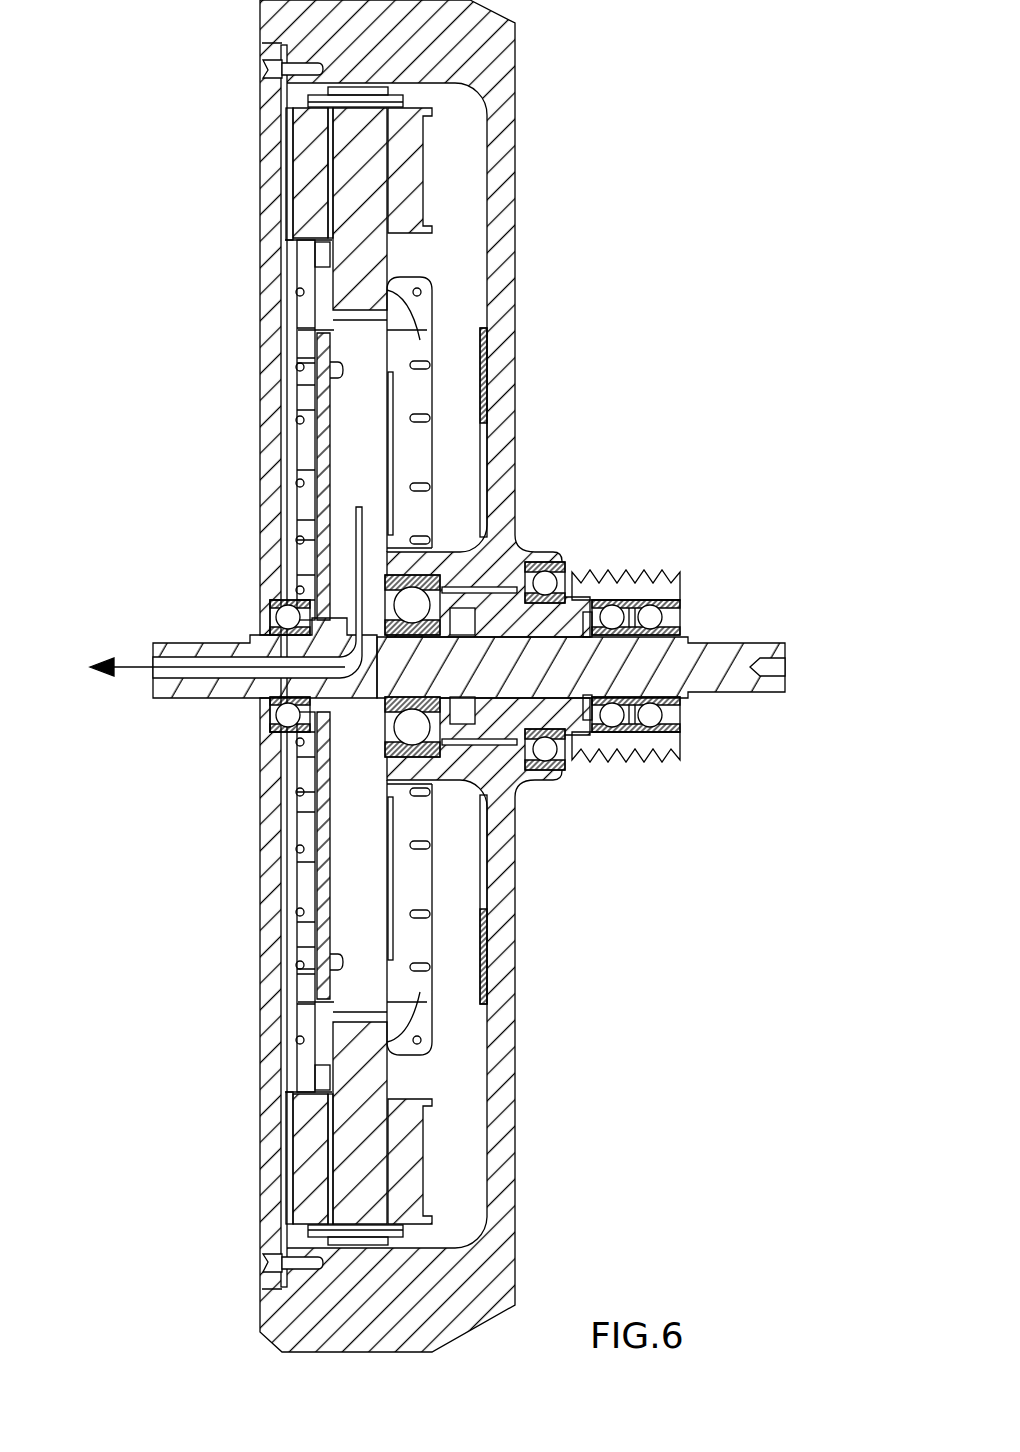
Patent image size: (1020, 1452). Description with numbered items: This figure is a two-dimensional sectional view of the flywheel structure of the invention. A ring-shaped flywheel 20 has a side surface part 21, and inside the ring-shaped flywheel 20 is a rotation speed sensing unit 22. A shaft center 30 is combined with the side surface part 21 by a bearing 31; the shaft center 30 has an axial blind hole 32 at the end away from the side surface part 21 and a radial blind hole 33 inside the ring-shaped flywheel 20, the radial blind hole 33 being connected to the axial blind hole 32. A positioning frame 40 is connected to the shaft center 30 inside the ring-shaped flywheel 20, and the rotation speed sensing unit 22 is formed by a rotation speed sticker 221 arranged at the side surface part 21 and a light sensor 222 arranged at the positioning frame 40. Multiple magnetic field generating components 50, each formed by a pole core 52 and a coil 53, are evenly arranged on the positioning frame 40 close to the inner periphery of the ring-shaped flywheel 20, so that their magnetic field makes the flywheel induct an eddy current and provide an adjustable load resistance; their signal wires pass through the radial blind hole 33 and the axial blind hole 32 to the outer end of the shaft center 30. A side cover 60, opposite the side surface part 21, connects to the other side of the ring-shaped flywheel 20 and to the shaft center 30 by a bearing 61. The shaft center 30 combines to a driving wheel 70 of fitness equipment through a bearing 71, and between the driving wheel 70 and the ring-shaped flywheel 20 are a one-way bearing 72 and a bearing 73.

The ring-shaped flywheel 20 is at (293, 1325).
The side surface part 21 is at (500, 1120).
The rotation speed sensing unit 22 is at (606, 340).
The rotation speed sticker 221 is at (487, 355).
The light sensor 222 is at (342, 370).
The shaft center 30 is at (712, 667).
The bearing 31 is at (410, 737).
The axial blind hole 32 is at (180, 688).
The radial blind hole 33 is at (350, 627).
The positioning frame 40 is at (297, 445).
The magnetic field generating components 50 is at (600, 135).
The pole core 52 is at (360, 212).
The coil 53 is at (402, 142).
The side cover 60 is at (272, 1110).
The bearing 61 is at (288, 617).
The driving wheel 70 is at (587, 722).
The bearing 71 is at (612, 722).
The one-way bearing 72 is at (517, 541).
The bearing 73 is at (545, 583).